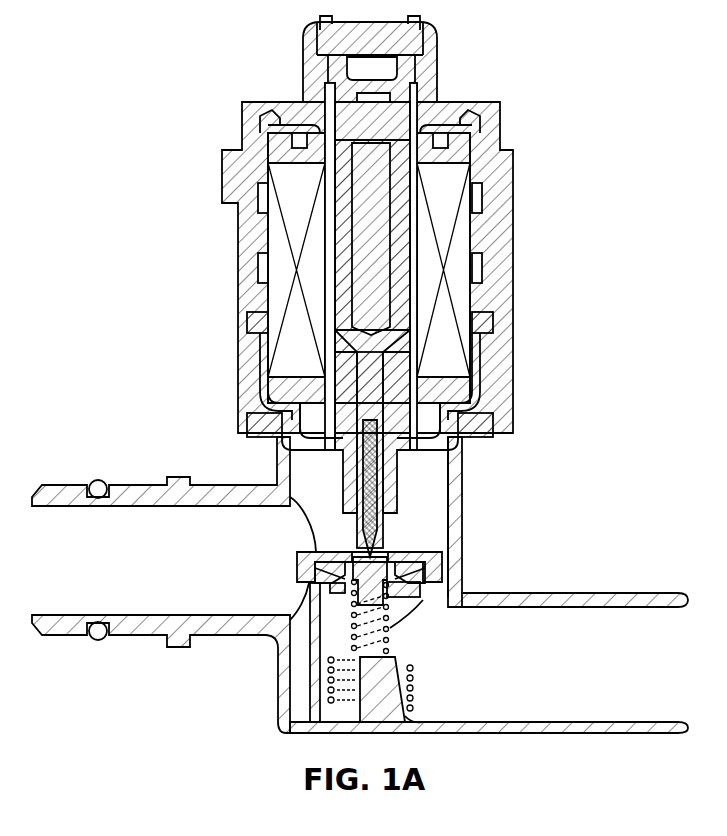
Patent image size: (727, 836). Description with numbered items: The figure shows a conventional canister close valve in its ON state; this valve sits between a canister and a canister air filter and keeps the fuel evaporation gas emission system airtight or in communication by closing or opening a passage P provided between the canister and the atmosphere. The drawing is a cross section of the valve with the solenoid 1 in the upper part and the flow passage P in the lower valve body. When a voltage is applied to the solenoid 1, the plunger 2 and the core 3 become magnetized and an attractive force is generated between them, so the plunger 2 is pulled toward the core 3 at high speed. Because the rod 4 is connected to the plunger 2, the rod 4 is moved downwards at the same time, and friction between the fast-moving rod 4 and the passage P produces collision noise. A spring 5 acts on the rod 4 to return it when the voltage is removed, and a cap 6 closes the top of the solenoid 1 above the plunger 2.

The solenoid 1 is at (472, 242).
The plunger 2 is at (375, 202).
The core 3 is at (487, 402).
The rod 4 is at (407, 543).
The spring 5 is at (352, 628).
The cap 6 is at (410, 72).
The passage P is at (443, 582).